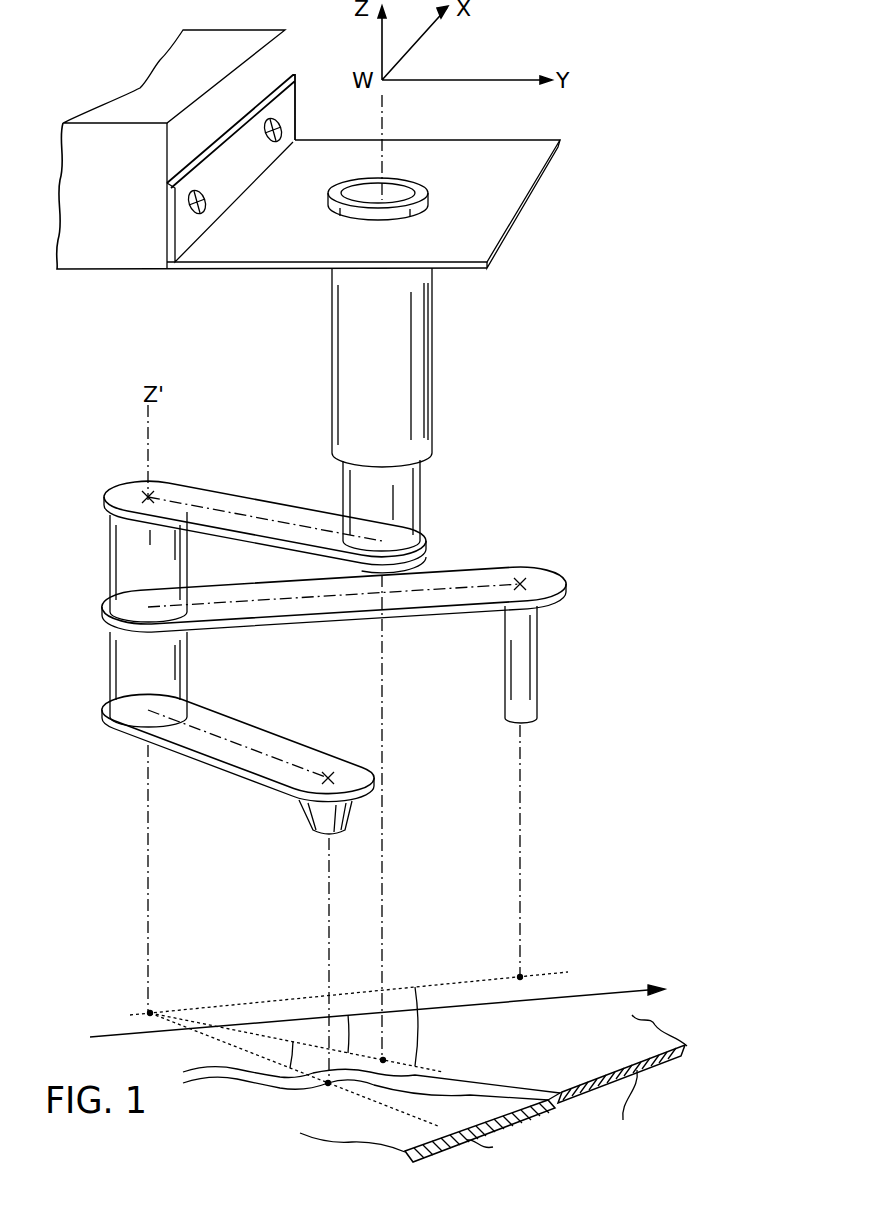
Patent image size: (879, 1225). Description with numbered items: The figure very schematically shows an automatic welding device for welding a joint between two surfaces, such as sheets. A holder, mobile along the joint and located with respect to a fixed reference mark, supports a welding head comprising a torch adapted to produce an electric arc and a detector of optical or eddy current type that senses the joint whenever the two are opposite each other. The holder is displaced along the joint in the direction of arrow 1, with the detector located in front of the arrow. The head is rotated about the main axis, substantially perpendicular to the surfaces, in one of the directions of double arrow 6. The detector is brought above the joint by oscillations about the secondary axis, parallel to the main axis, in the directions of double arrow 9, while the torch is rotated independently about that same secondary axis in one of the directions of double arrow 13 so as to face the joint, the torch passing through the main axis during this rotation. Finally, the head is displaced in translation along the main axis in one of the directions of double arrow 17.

The arrow 1 is at (520, 275).
The double arrow 6 is at (183, 463).
The double arrow 9 is at (562, 650).
The double arrow 13 is at (434, 786).
The double arrow 17 is at (453, 488).